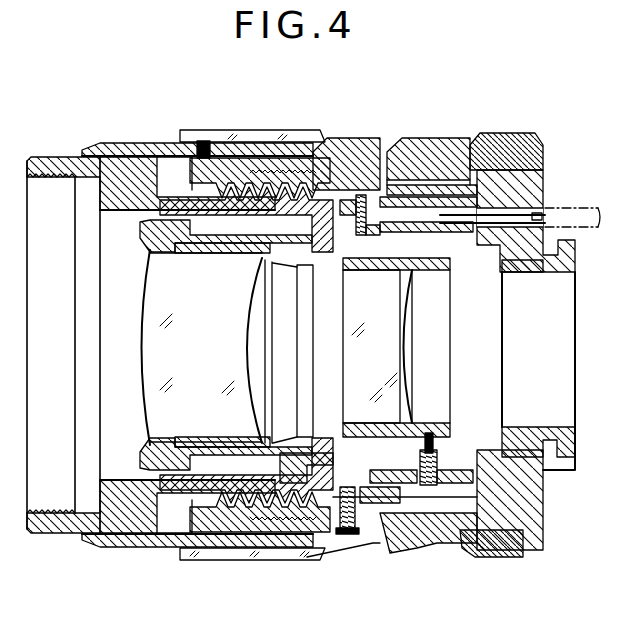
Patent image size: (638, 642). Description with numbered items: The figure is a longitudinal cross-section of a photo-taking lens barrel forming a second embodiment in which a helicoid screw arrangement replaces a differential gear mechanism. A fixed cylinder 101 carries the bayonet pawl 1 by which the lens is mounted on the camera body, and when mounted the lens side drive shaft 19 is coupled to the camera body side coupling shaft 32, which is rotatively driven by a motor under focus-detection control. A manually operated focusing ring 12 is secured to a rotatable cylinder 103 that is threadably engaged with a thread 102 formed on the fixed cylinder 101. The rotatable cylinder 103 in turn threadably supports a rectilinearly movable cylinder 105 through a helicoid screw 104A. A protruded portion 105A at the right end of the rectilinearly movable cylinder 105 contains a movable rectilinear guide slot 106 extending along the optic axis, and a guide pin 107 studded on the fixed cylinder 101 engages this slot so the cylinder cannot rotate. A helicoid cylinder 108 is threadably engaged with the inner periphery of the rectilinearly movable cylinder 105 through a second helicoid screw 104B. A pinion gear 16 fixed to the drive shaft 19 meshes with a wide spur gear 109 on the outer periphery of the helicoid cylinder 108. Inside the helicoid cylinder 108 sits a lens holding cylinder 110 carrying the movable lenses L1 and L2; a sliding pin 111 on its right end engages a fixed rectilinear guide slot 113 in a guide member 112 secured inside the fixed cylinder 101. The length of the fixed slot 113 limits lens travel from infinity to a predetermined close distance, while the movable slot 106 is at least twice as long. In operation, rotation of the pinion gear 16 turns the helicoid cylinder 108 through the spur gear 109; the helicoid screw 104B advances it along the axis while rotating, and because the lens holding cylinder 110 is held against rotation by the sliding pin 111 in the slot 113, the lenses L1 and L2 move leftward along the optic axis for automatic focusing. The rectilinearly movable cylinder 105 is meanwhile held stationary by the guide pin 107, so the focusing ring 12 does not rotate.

The bayonet pawl 1 is at (577, 247).
The manually operated focusing ring 12 is at (125, 143).
The pinion gear 16 is at (362, 192).
The lens side drive shaft 19 is at (523, 212).
The camera body side coupling shaft 32 is at (580, 208).
The fixed cylinder 101 is at (422, 148).
The thread 102 is at (262, 170).
The rotatable cylinder 103 is at (193, 183).
The helicoid screw 104A is at (297, 190).
The helicoid screw 104B is at (227, 229).
The rectilinearly movable cylinder 105 is at (58, 160).
The protruded portion 105A is at (400, 508).
The movable rectilinear guide slot 106 is at (380, 505).
The guide pin 107 is at (345, 535).
The helicoid cylinder 108 is at (252, 218).
The spur gear 109 is at (350, 233).
The lens holding cylinder 110 is at (445, 252).
The sliding pin 111 is at (450, 460).
The guide member 112 is at (480, 480).
The fixed rectilinear guide slot 113 is at (457, 540).
The movable lens L1 is at (148, 327).
The movable lens L2 is at (403, 348).